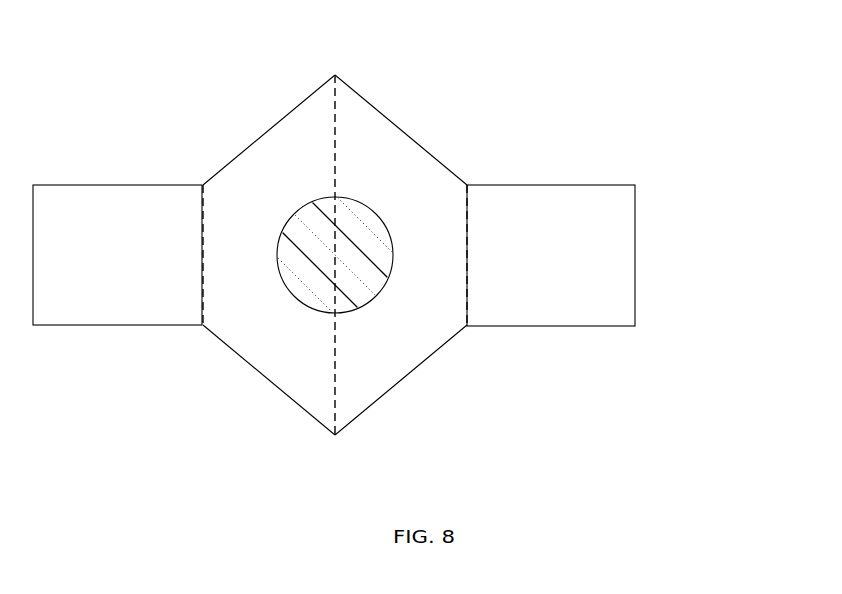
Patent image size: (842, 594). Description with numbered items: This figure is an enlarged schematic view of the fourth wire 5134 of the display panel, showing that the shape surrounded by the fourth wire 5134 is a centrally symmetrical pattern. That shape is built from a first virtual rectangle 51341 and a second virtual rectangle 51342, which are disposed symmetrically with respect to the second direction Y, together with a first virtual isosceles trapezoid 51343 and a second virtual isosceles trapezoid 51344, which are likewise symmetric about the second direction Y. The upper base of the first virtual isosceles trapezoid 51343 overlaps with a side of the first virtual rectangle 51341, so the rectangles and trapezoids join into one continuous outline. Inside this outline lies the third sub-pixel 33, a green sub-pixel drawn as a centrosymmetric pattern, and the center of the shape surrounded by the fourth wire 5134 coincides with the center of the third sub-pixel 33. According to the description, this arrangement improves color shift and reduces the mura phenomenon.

The fourth wire 5134 is at (411, 249).
The first virtual rectangle 51341 is at (171, 169).
The second virtual rectangle 51342 is at (628, 169).
The first virtual isosceles trapezoid 51343 is at (338, 224).
The second virtual isosceles trapezoid 51344 is at (481, 225).
The third sub-pixel 33 is at (392, 297).